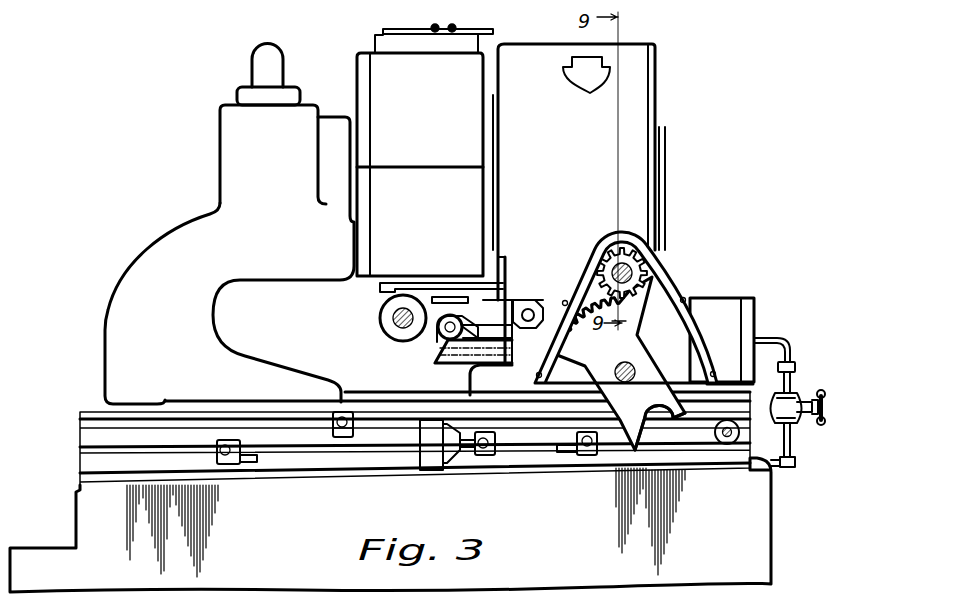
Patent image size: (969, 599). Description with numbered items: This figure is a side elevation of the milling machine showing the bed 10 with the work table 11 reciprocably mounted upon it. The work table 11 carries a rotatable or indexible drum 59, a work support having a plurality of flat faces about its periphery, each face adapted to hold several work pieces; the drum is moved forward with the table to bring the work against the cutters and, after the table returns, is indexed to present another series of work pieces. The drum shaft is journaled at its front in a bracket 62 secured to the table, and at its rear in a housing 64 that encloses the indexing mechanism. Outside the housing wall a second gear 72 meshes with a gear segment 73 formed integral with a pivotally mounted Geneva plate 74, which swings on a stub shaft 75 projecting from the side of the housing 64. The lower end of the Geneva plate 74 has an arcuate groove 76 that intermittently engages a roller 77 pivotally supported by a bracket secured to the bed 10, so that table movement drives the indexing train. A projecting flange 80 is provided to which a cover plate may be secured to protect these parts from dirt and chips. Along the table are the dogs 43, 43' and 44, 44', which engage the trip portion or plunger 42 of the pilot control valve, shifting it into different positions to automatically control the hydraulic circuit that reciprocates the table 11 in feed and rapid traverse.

The bed 10 is at (758, 540).
The work table 11 is at (90, 440).
The trip portion or plunger 42 is at (428, 457).
The dog 43 is at (567, 465).
The dog 43' is at (254, 473).
The dog 44 is at (501, 469).
The dog 44' is at (330, 459).
The indexible drum 59 is at (355, 72).
The bracket 62 is at (230, 165).
The housing 64 is at (634, 107).
The second gear 72 is at (638, 263).
The gear segment 73 is at (632, 296).
The Geneva plate 74 is at (635, 345).
The stub shaft 75 is at (636, 369).
The arcuate groove 76 is at (653, 395).
The roller 77 is at (742, 422).
The projecting flange 80 is at (670, 283).